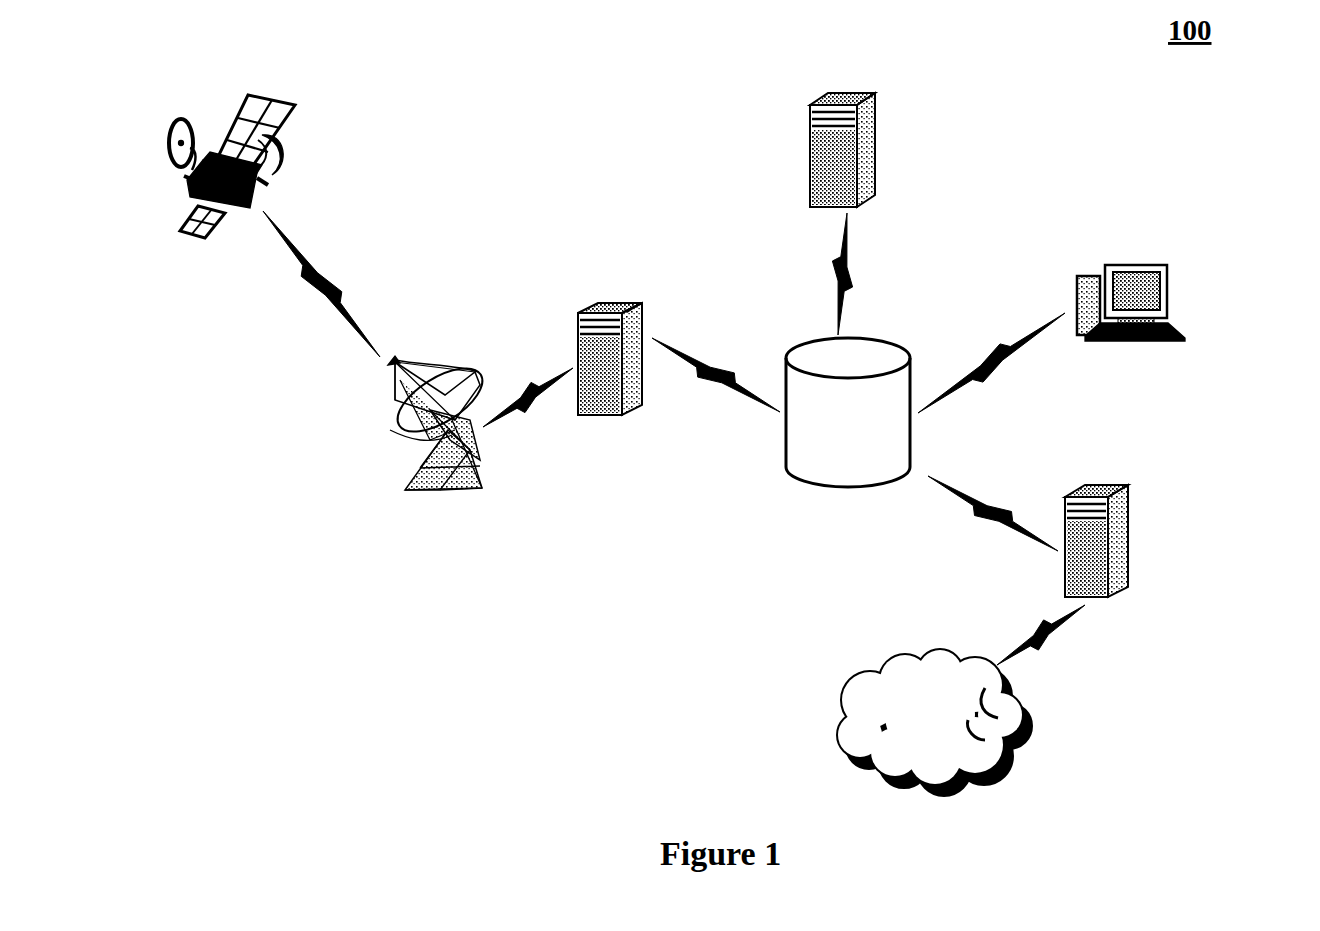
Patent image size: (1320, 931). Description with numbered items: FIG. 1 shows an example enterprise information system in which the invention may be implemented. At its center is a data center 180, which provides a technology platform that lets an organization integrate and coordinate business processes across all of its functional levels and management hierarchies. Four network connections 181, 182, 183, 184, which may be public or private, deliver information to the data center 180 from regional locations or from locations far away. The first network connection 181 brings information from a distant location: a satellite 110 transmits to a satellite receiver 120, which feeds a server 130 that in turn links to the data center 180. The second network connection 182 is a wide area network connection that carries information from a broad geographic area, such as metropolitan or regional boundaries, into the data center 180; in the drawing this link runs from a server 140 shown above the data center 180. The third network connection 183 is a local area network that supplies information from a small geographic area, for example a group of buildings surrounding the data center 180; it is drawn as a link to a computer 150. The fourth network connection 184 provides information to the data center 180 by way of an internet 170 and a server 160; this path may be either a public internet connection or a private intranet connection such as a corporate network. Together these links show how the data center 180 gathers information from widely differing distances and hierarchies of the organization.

The satellite 110 is at (290, 140).
The satellite receiver 120 is at (378, 427).
The server 130 is at (570, 316).
The server 140 is at (880, 142).
The user computer 150 is at (1175, 314).
The server 160 is at (1137, 545).
The internet 170 is at (1018, 718).
The data center 180 is at (815, 487).
The network connection 181 is at (693, 350).
The network connection 182 is at (857, 275).
The network connection 183 is at (992, 341).
The network connection 184 is at (990, 498).